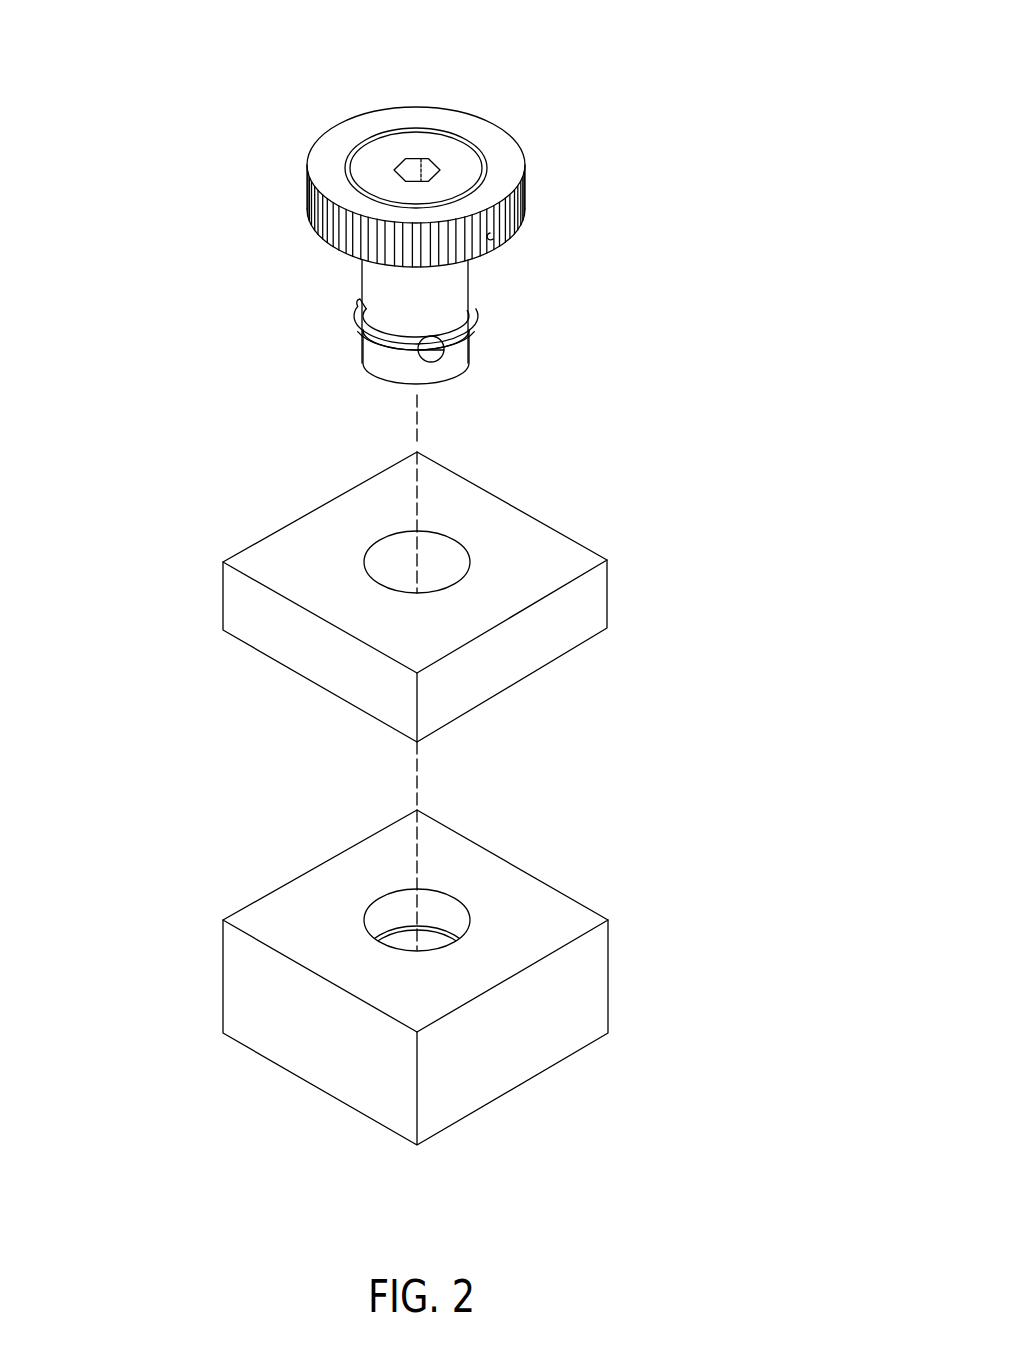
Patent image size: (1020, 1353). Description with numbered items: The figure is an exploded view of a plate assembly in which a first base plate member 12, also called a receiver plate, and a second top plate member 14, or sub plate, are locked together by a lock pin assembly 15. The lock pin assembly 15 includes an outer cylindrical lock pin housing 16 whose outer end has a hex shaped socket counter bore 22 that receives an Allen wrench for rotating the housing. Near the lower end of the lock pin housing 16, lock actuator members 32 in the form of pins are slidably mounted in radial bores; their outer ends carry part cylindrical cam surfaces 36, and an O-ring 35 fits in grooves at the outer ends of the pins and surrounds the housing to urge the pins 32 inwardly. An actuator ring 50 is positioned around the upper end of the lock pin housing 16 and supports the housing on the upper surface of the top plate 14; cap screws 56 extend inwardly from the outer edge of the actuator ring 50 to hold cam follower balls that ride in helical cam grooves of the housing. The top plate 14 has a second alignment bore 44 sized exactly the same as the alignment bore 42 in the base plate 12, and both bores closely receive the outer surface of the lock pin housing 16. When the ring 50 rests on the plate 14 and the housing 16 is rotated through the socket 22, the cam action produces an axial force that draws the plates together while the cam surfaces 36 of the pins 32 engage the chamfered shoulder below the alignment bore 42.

The first base plate member 12 is at (572, 1003).
The second top plate member 14 is at (582, 608).
The lock pin assembly 15 is at (247, 257).
The lock pin housing 16 is at (442, 147).
The hex shaped socket counter bore 22 is at (409, 167).
The lock actuator member 32 is at (356, 308).
The O-ring 35 is at (360, 342).
The cam surface 36 is at (468, 347).
The alignment bore 42 is at (443, 907).
The second alignment bore 44 is at (400, 553).
The actuator ring 50 is at (505, 158).
The cap screw 56 is at (493, 238).